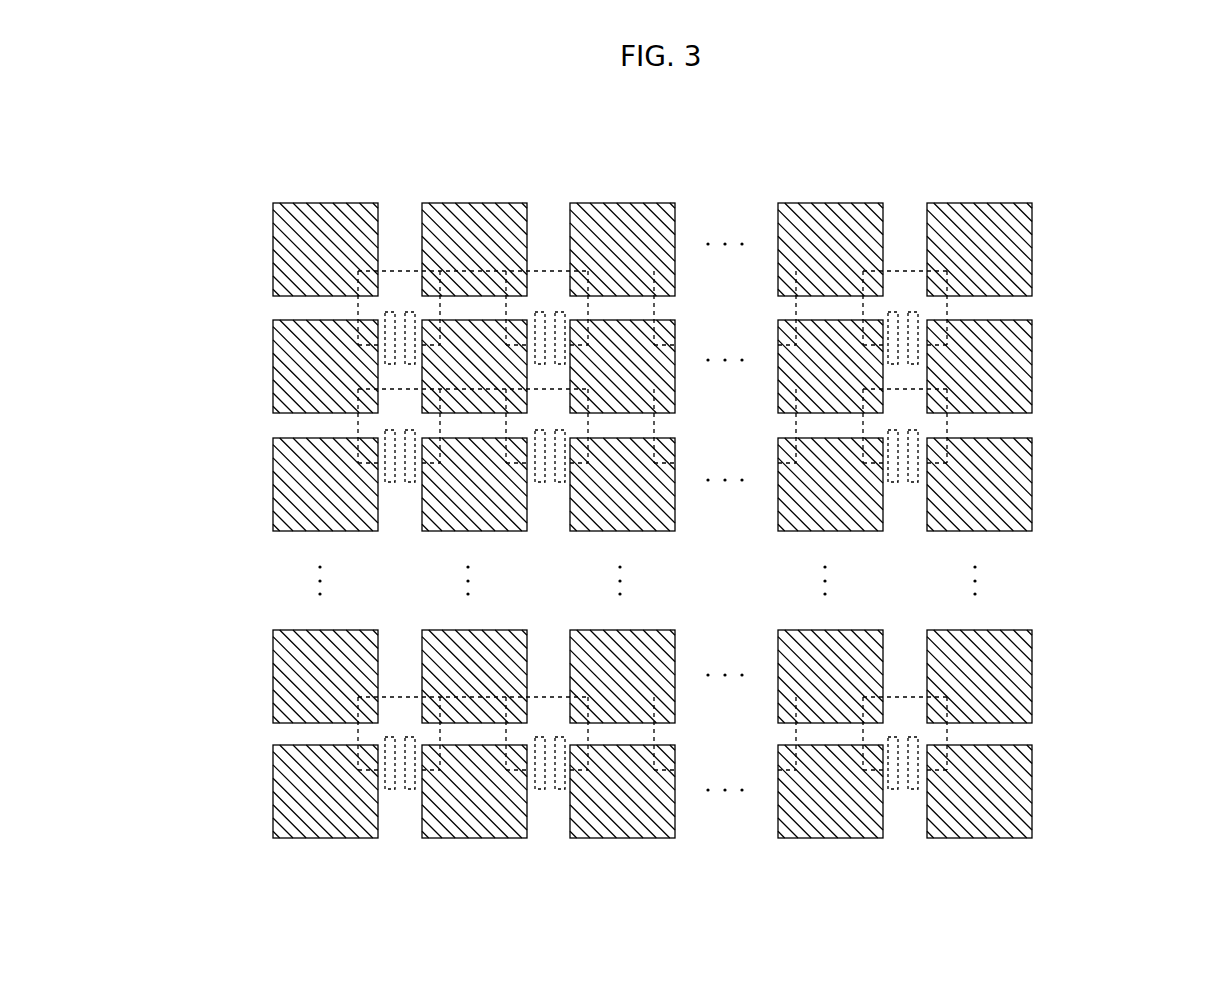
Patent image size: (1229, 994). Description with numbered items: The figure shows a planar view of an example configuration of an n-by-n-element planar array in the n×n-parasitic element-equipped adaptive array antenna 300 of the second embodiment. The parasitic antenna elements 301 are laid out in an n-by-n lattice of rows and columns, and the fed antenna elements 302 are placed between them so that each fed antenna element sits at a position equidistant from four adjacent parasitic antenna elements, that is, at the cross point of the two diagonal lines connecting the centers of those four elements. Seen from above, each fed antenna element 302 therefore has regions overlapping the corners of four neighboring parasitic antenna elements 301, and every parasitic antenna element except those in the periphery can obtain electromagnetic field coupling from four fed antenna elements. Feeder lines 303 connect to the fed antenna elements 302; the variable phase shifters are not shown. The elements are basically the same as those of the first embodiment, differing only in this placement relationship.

The n×n-parasitic element-equipped adaptive array antenna 300 is at (1100, 198).
The parasitic antenna elements 301 is at (461, 213).
The fed antenna elements 302 is at (375, 305).
The feeder lines 303 is at (392, 360).